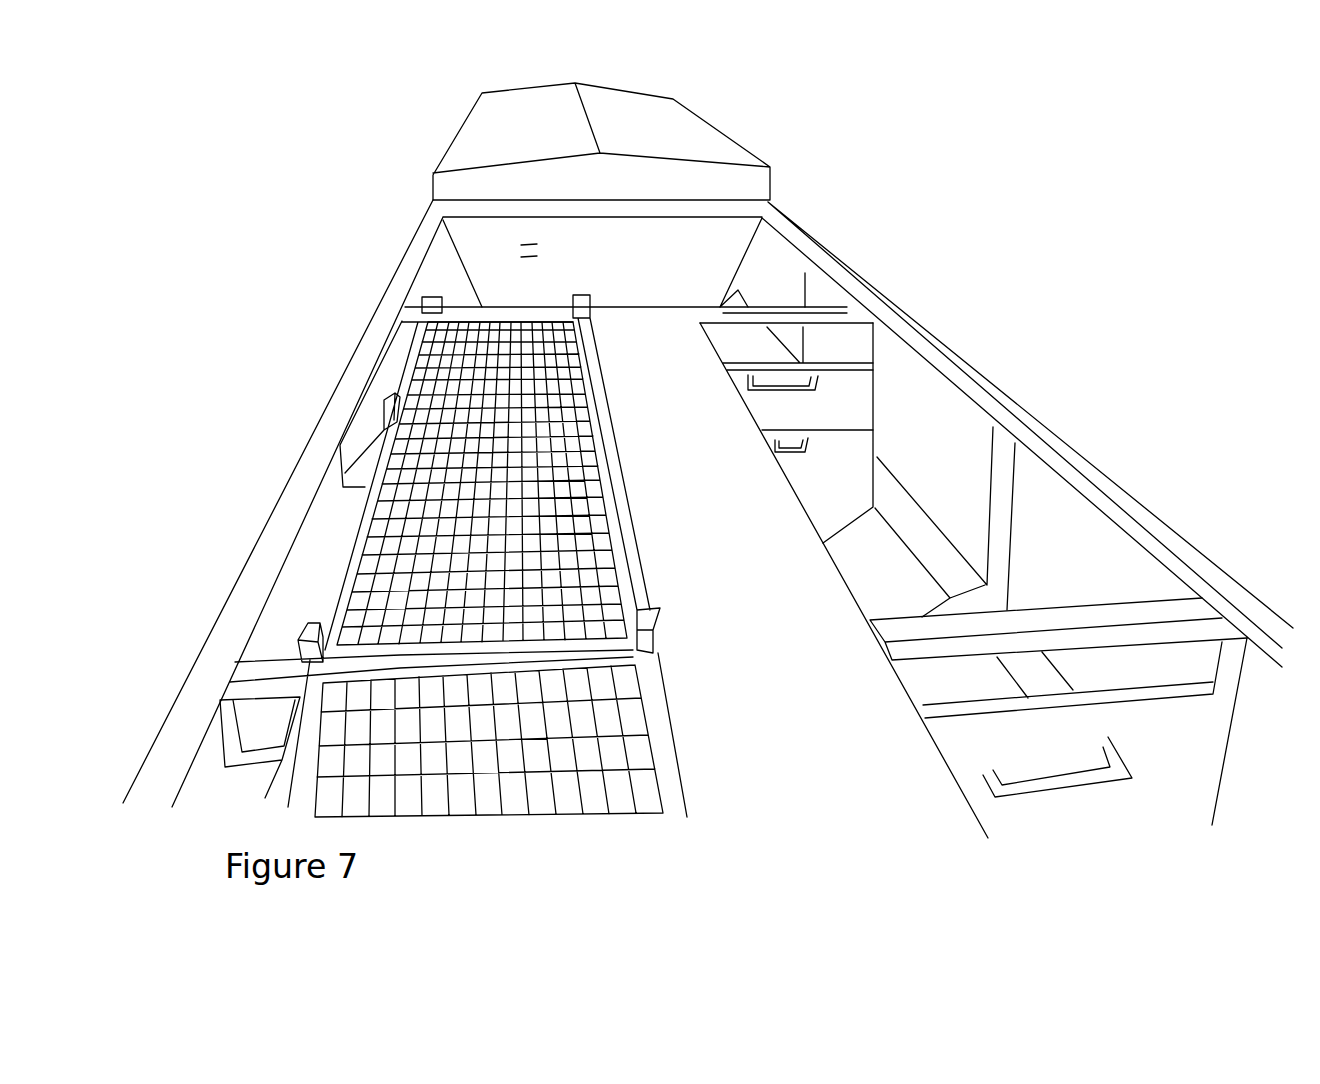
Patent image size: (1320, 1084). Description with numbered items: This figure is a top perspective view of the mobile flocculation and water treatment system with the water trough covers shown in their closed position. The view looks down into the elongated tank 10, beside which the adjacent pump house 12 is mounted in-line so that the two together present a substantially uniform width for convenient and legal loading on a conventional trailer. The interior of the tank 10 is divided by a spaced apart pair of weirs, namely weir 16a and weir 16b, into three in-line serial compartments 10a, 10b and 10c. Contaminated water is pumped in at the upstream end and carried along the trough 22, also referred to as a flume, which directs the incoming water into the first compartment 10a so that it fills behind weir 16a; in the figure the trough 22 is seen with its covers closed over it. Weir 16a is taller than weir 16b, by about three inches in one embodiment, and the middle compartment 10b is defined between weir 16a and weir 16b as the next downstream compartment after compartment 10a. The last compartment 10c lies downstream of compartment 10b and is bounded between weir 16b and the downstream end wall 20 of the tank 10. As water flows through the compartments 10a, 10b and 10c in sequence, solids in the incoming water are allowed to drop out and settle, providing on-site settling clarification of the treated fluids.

The tank 10 is at (842, 238).
The compartment 10a is at (1179, 761).
The compartment 10b is at (911, 480).
The compartment 10c is at (654, 291).
The pump house 12 is at (641, 82).
The weir 16a is at (1095, 697).
The weir 16b is at (840, 363).
The downstream end wall 20 is at (518, 265).
The trough 22 is at (690, 527).